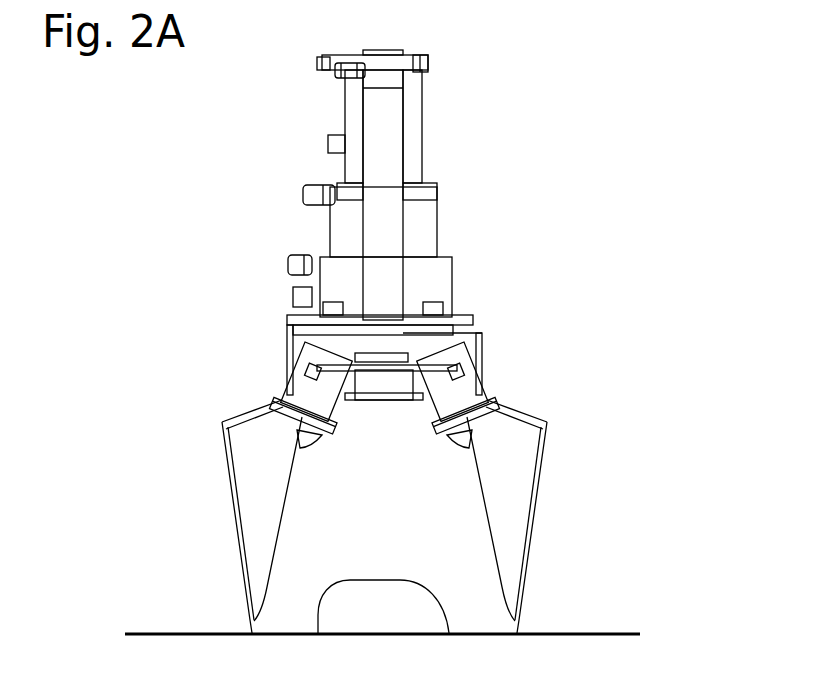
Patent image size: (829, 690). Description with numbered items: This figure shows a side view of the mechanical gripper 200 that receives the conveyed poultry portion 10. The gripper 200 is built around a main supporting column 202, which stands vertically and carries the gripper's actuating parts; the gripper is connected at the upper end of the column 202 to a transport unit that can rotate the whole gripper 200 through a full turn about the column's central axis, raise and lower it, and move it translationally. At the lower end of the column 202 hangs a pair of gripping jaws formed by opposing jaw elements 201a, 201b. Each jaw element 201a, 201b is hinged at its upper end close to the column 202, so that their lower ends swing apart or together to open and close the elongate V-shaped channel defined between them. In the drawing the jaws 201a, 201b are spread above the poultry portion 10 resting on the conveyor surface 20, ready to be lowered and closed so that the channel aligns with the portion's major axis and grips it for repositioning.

The mechanical gripper 200 is at (221, 185).
The main supporting column 202 is at (415, 123).
The jaw element 201a is at (255, 470).
The jaw element 201b is at (512, 492).
The poultry portion 10 is at (368, 603).
The support surface 20 is at (598, 633).